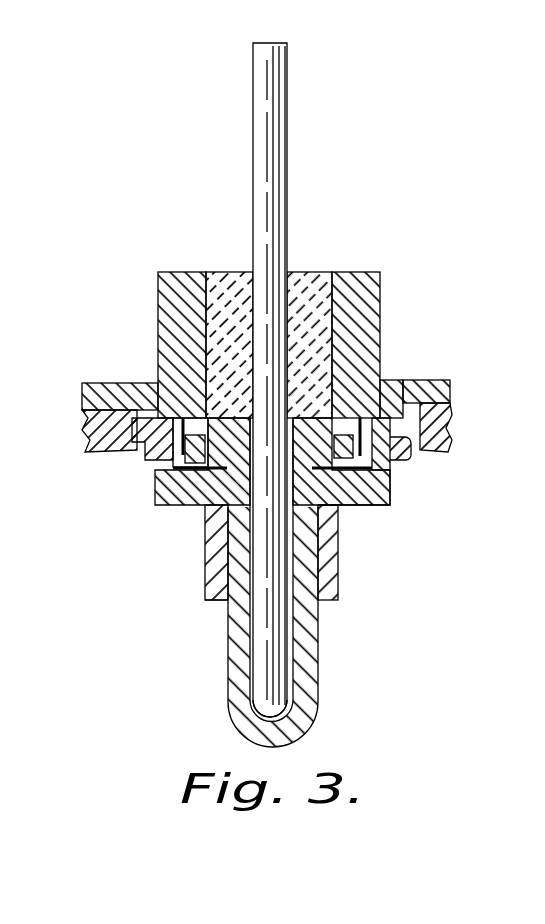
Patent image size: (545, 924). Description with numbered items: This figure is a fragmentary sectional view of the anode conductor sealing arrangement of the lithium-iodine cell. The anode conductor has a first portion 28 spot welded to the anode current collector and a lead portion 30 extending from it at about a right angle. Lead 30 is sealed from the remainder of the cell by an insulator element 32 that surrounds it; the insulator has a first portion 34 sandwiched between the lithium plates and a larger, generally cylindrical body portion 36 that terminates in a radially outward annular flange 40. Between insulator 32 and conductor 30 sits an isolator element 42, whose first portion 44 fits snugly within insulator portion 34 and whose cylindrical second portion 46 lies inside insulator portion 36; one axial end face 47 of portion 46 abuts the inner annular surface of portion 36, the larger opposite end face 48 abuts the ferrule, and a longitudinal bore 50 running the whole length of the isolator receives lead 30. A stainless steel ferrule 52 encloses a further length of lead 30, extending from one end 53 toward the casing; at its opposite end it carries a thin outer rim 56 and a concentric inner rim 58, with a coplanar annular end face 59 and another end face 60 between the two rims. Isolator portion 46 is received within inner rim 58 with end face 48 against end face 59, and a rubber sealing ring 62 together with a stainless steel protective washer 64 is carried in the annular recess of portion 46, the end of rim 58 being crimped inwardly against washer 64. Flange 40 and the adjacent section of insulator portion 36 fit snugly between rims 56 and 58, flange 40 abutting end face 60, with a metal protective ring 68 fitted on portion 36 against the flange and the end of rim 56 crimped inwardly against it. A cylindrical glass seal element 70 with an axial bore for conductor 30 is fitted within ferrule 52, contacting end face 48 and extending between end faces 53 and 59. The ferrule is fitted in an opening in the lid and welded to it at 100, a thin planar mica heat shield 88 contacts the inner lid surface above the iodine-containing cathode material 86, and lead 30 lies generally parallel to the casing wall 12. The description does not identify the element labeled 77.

The casing wall 12 is at (510, 546).
The first portion of conductor 28 is at (262, 668).
The lead portion of conductor 30 is at (256, 60).
The insulator element 32 is at (355, 530).
The first portion of insulator 34 is at (213, 592).
The second body portion of insulator 36 is at (382, 505).
The annular flange portion 40 is at (452, 421).
The isolator element 42 is at (216, 538).
The first portion of isolator 44 is at (318, 660).
The second portion of isolator 46 is at (242, 417).
The axial end face of isolator portion 47 is at (205, 516).
The opposite axial end face of isolator portion 48 is at (302, 412).
The longitudinal passage or bore 50 is at (248, 612).
The ferrule 52 is at (402, 289).
The one end of ferrule 53 is at (356, 272).
The outer annular rim or flange 56 is at (455, 438).
The inner rim or flange 58 is at (156, 469).
The annular end face of ferrule 59 is at (200, 418).
The annular end face between rims 60 is at (150, 378).
The sealing ring 62 is at (155, 490).
The protective ring 64 is at (383, 480).
The protective ring 68 is at (390, 455).
The seal element 70 is at (232, 272).
The fitting flange 77 is at (430, 383).
The cathode material 86 is at (100, 432).
The heat shield element 88 is at (452, 405).
The weld 100 is at (405, 382).